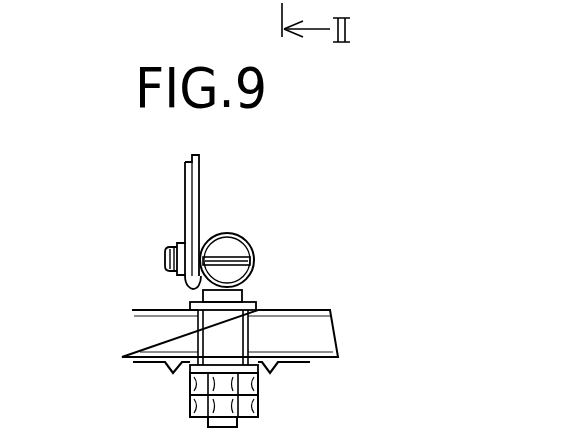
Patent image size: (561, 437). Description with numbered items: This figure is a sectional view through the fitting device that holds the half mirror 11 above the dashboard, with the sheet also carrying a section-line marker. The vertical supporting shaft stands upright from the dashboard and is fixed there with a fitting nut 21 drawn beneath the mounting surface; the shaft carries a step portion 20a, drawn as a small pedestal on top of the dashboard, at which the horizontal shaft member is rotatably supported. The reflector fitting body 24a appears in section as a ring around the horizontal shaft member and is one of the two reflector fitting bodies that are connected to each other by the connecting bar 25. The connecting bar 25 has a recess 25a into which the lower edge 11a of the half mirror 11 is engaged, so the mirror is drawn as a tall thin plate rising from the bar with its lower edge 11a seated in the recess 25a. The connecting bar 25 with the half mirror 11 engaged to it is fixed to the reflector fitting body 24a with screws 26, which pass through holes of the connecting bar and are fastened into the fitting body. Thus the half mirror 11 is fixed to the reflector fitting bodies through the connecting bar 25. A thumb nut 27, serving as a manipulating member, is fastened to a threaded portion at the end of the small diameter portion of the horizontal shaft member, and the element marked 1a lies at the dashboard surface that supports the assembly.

The base plate 1a is at (320, 307).
The half mirror 11 is at (186, 187).
The lower edge 11a is at (183, 283).
The step portion 20a is at (248, 297).
The fitting nut 21 is at (258, 387).
The reflector fitting body 24a is at (253, 250).
The connecting bar 25 is at (178, 284).
The recess 25a is at (187, 242).
The screws 26 is at (165, 267).
The thumb nut 27 is at (232, 248).